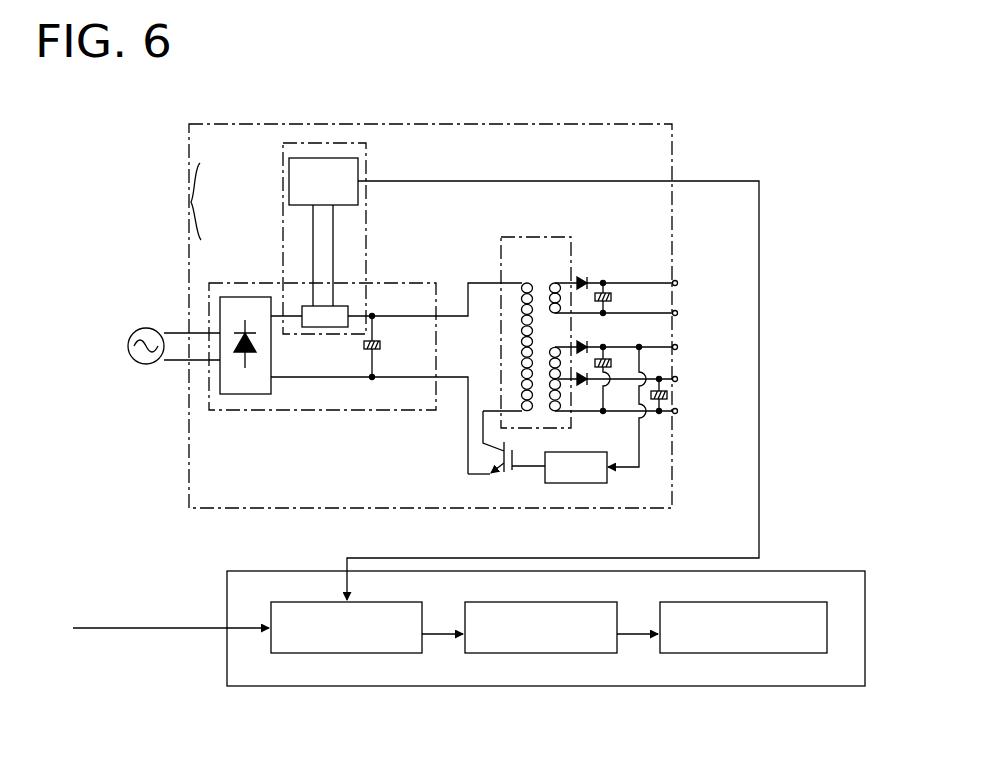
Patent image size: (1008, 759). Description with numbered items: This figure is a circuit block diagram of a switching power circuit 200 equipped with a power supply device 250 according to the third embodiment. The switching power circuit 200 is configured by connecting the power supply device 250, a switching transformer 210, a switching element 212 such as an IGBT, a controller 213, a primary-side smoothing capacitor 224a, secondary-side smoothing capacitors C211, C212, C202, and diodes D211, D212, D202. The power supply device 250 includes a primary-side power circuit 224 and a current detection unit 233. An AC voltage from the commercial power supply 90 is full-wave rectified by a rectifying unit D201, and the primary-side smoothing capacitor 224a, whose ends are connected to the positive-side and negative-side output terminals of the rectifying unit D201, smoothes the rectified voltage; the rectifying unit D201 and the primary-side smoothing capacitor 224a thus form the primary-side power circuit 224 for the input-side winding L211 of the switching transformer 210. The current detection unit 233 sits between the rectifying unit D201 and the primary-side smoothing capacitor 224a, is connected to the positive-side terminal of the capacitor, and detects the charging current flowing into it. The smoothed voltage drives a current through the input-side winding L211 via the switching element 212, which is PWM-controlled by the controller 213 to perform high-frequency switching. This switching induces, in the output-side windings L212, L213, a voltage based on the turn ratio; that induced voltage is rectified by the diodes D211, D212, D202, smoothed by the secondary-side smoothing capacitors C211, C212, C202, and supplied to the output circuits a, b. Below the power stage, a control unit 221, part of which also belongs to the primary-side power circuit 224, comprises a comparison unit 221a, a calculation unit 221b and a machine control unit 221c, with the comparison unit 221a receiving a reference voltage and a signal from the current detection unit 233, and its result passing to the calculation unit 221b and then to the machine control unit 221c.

The switching power circuit 200 is at (216, 123).
The power supply device 250 is at (175, 201).
The current detection unit 233 is at (282, 197).
The primary-side power circuit 224 is at (228, 282).
The primary-side smoothing capacitor 224a is at (380, 348).
The commercial power supply 90 is at (145, 365).
The rectifying unit D201 is at (245, 395).
The switching transformer 210 is at (499, 246).
The input-side winding L211 is at (520, 333).
The output-side winding L213 is at (550, 282).
The output-side winding L212 is at (548, 410).
The diode D202 is at (584, 279).
The secondary-side smoothing capacitor C202 is at (611, 297).
The diode D212 is at (585, 345).
The secondary-side smoothing capacitor C212 is at (611, 363).
The diode D211 is at (584, 386).
The secondary-side smoothing capacitor C211 is at (667, 395).
The switching element 212 is at (511, 475).
The controller 213 is at (575, 484).
The control unit 221 is at (236, 582).
The comparison unit 221a is at (345, 653).
The calculation unit 221b is at (537, 653).
The machine control unit 221c is at (750, 653).
The output circuit a is at (682, 371).
The output circuit b is at (682, 291).